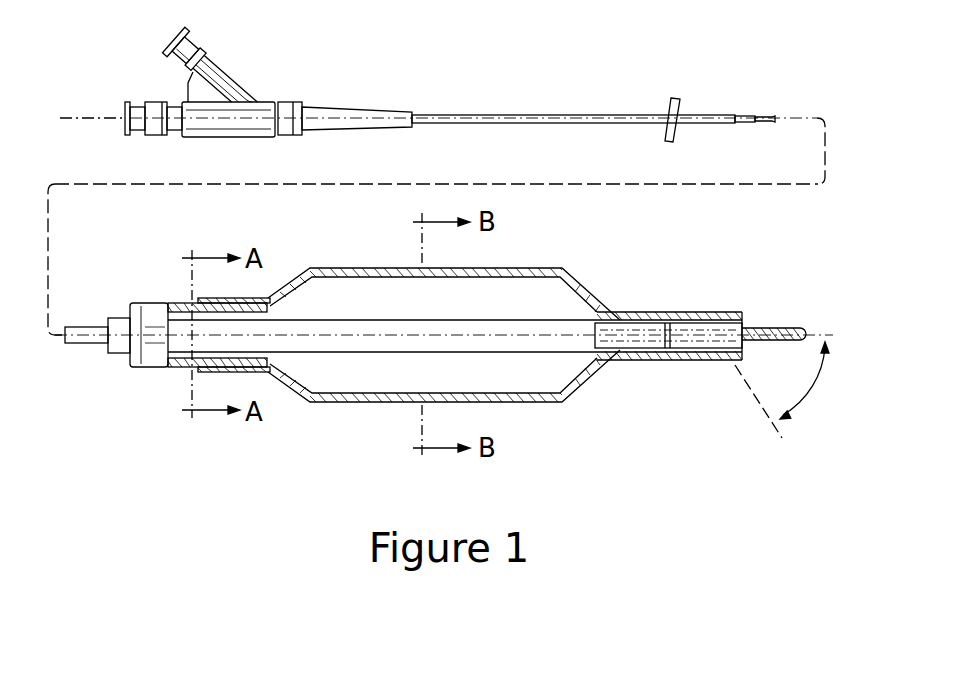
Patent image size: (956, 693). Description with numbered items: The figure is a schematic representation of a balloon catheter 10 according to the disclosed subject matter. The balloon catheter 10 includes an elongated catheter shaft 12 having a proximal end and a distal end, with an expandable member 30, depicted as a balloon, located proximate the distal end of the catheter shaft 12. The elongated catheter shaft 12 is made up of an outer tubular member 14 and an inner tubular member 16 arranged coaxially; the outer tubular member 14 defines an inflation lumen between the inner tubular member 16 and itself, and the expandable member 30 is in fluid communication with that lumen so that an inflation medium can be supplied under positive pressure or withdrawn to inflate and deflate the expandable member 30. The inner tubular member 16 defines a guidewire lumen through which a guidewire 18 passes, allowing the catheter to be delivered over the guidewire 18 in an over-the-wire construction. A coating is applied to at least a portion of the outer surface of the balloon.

The balloon catheter 10 is at (612, 75).
The elongated catheter shaft 12 is at (558, 125).
The outer tubular member 14 is at (697, 125).
The inner tubular member 16 is at (742, 112).
The guidewire 18 is at (768, 123).
The expandable member 30 is at (328, 295).